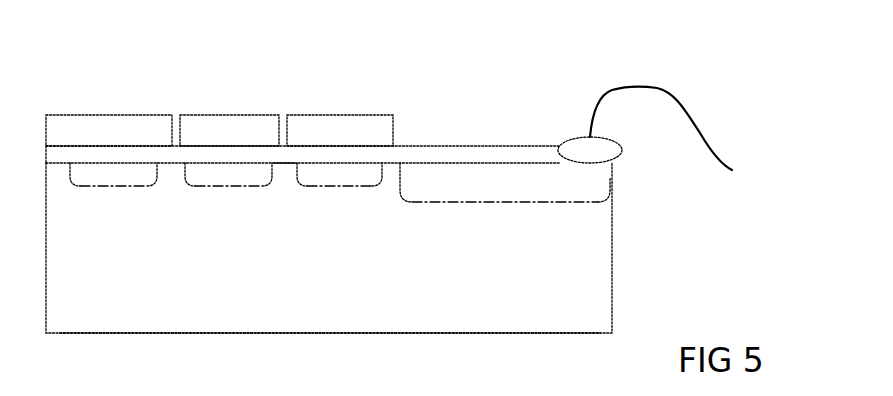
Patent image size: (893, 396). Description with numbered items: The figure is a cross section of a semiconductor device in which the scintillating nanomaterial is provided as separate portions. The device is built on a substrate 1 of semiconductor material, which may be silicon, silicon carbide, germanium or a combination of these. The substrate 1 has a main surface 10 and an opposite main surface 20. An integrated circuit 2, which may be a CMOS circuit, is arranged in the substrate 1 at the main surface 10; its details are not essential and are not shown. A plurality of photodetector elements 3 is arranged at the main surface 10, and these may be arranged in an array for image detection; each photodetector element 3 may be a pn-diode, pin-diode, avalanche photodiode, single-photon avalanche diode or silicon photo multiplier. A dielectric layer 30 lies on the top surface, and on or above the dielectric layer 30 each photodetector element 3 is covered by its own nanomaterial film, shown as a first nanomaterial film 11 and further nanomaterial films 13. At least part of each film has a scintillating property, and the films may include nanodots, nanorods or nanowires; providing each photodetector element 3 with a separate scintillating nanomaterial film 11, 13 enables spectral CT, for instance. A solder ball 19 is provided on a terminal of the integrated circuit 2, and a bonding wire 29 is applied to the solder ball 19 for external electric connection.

The substrate 1 is at (582, 302).
The integrated circuit 2 is at (503, 190).
The photodetector element 3 is at (135, 175).
The main surface 10 is at (287, 163).
The nanomaterial film 11 is at (122, 127).
The further nanomaterial films 13 is at (232, 127).
The solder ball 19 is at (590, 150).
The opposite main surface 20 is at (288, 333).
The bonding wire 29 is at (700, 135).
The dielectric layer 30 is at (493, 155).